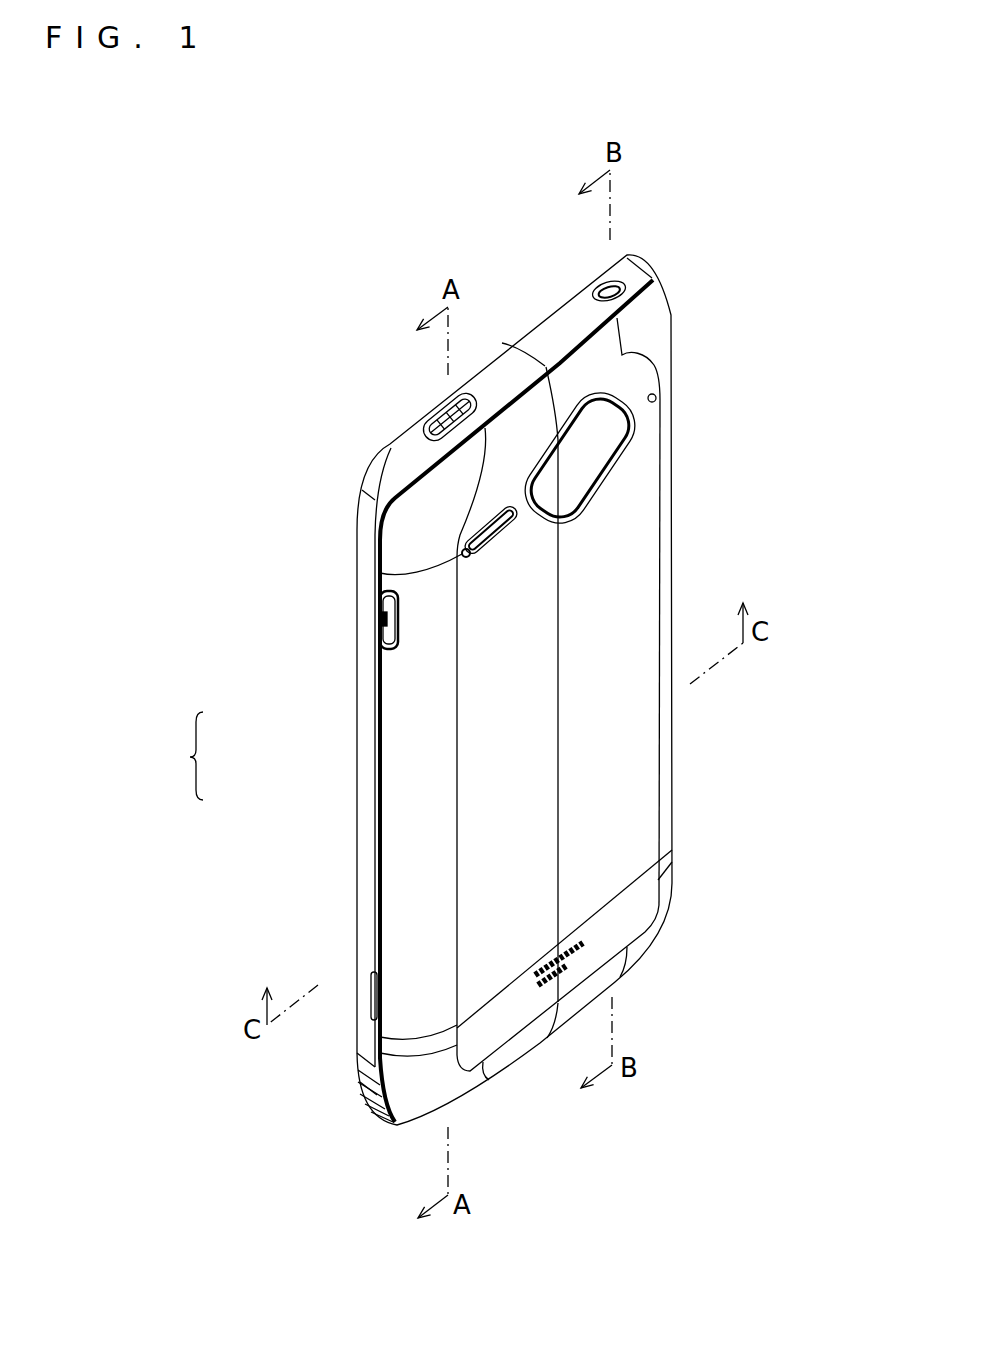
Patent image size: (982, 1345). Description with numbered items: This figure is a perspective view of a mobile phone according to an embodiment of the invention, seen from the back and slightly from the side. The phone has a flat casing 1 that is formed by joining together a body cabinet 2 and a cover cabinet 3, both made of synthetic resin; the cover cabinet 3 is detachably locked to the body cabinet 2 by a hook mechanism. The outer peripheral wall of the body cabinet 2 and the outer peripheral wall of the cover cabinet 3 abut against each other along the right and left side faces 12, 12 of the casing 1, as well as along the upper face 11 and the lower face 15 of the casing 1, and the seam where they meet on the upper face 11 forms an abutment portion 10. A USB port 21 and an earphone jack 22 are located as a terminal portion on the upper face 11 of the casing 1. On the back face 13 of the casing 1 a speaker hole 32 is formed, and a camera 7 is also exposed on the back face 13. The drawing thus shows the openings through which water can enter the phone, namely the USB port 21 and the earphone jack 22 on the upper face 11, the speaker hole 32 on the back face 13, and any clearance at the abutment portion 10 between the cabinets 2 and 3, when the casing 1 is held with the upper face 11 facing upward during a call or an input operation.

The casing 1 is at (191, 756).
The body cabinet 2 is at (364, 717).
The cover cabinet 3 is at (407, 770).
The camera 7 is at (580, 466).
The abutment portion 10 is at (377, 456).
The upper face 11 is at (547, 335).
The side face 12 is at (688, 397).
The back face 13 is at (612, 583).
The lower face 15 is at (399, 1127).
The USB port 21 is at (446, 407).
The earphone jack 22 is at (608, 283).
The speaker hole 32 is at (492, 530).